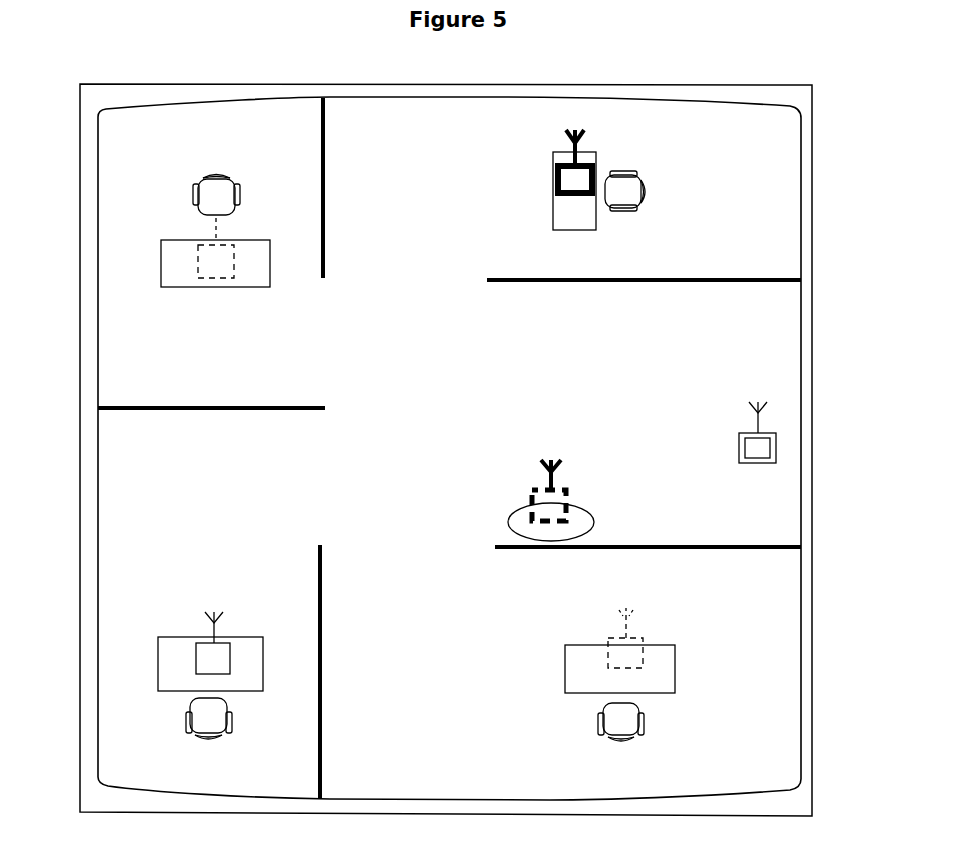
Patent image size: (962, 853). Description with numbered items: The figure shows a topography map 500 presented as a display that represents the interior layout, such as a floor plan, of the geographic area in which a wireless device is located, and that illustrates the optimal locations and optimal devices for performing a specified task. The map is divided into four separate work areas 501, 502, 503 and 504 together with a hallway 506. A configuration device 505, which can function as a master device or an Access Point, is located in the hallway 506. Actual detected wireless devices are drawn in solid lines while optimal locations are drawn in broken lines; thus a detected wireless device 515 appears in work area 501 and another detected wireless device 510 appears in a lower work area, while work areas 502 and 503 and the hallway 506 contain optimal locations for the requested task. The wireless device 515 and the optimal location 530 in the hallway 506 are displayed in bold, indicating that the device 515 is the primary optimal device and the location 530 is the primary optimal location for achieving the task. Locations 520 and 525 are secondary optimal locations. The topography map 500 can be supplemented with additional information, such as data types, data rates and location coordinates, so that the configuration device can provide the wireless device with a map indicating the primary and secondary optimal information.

The topography map 500 is at (446, 430).
The work area 501 is at (678, 224).
The work area 502 is at (594, 672).
The work area 503 is at (173, 224).
The work area 504 is at (174, 483).
The configuration device 505 is at (757, 444).
The hallway 506 is at (682, 437).
The wireless device 510 is at (210, 675).
The wireless device 515 is at (599, 180).
The location 520 is at (215, 237).
The location 525 is at (620, 674).
The optimal location 530 is at (551, 502).